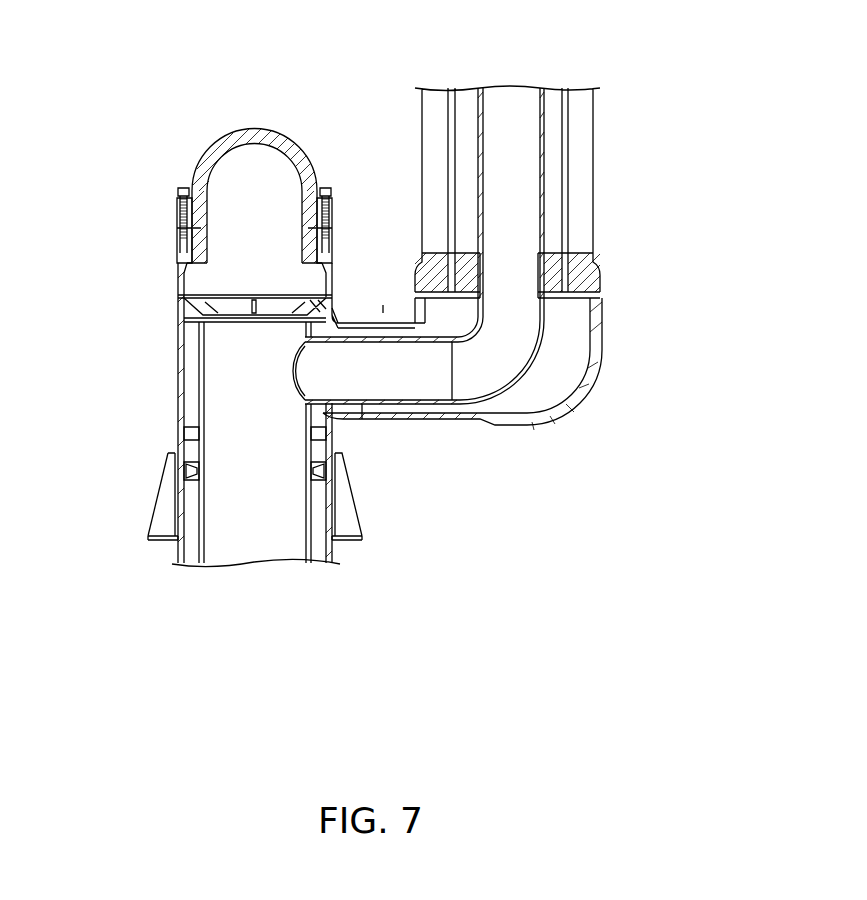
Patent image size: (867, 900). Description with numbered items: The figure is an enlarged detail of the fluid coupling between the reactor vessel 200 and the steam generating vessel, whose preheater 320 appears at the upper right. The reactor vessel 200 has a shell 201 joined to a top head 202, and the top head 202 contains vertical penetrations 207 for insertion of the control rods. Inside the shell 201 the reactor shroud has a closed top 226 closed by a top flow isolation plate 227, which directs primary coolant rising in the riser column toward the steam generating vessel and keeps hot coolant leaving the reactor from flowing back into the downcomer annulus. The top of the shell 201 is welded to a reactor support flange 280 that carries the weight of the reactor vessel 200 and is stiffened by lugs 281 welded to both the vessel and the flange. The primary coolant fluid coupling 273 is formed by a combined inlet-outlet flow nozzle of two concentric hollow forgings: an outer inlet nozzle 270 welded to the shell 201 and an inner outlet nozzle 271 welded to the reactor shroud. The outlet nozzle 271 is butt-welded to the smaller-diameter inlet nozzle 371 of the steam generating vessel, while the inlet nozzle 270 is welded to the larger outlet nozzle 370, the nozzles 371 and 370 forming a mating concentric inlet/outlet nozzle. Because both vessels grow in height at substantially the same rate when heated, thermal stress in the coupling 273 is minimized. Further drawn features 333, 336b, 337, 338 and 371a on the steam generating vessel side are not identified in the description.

The reactor vessel 200 is at (276, 113).
The shell 201 is at (178, 378).
The top head 202 is at (152, 170).
The vertical penetrations 207 is at (312, 140).
The closed top 226 is at (276, 334).
The top flow isolation plate 227 is at (228, 323).
The inlet nozzle 270 is at (376, 434).
The outlet nozzle 271 is at (376, 398).
The primary coolant fluid coupling 273 is at (325, 300).
The reactor support flange 280 is at (160, 523).
The lugs 281 is at (152, 485).
The preheater 320 is at (595, 183).
The flange 333 is at (600, 272).
The elbow portion 336b is at (588, 405).
The inner pipe 337 is at (478, 185).
The elbow body 338 is at (573, 355).
The outlet nozzle 370 is at (350, 430).
The inlet nozzle 371 is at (300, 325).
The liner bend 371a is at (528, 365).